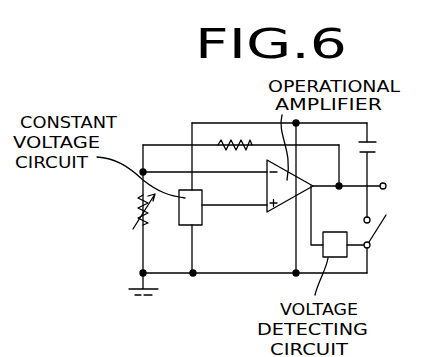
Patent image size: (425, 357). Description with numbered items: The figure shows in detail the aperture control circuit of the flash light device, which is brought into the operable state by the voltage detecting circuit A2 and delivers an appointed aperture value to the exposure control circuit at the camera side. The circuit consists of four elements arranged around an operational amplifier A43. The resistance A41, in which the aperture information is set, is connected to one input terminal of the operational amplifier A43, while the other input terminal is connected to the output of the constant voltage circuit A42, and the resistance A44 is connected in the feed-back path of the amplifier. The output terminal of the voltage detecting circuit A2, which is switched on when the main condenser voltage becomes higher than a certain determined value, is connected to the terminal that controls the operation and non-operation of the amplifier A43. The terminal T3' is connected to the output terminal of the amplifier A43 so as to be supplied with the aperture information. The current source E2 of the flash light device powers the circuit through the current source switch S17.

The resistance A44 is at (235, 143).
The resistance A41 is at (135, 211).
The constant voltage circuit A42 is at (203, 218).
The operational amplifier A43 is at (282, 214).
The voltage detecting circuit A2 is at (330, 240).
The current source E2 is at (378, 170).
The terminal T3' is at (392, 188).
The current source switch S17 is at (384, 232).